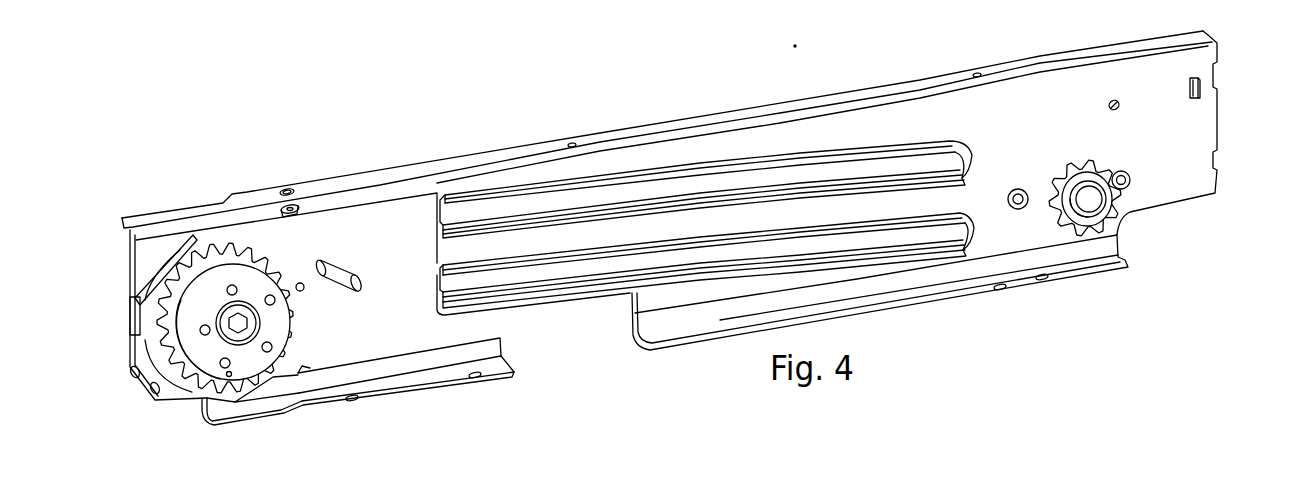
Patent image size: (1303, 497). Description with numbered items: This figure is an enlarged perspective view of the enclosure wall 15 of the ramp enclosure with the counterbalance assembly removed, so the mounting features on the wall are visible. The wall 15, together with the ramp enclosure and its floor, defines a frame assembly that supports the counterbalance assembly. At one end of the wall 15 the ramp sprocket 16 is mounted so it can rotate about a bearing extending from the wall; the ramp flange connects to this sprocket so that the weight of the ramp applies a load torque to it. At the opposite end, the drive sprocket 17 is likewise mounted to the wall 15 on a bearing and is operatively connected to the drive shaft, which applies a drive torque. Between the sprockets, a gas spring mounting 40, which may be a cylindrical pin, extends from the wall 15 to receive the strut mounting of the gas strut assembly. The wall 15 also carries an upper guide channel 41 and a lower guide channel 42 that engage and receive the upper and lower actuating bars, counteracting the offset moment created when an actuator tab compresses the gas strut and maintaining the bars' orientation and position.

The enclosure wall 15 is at (669, 228).
The ramp sprocket 16 is at (214, 245).
The drive sprocket 17 is at (1122, 216).
The gas spring mounting 40 is at (360, 278).
The upper guide channel 41 is at (922, 168).
The lower guide channel 42 is at (608, 268).